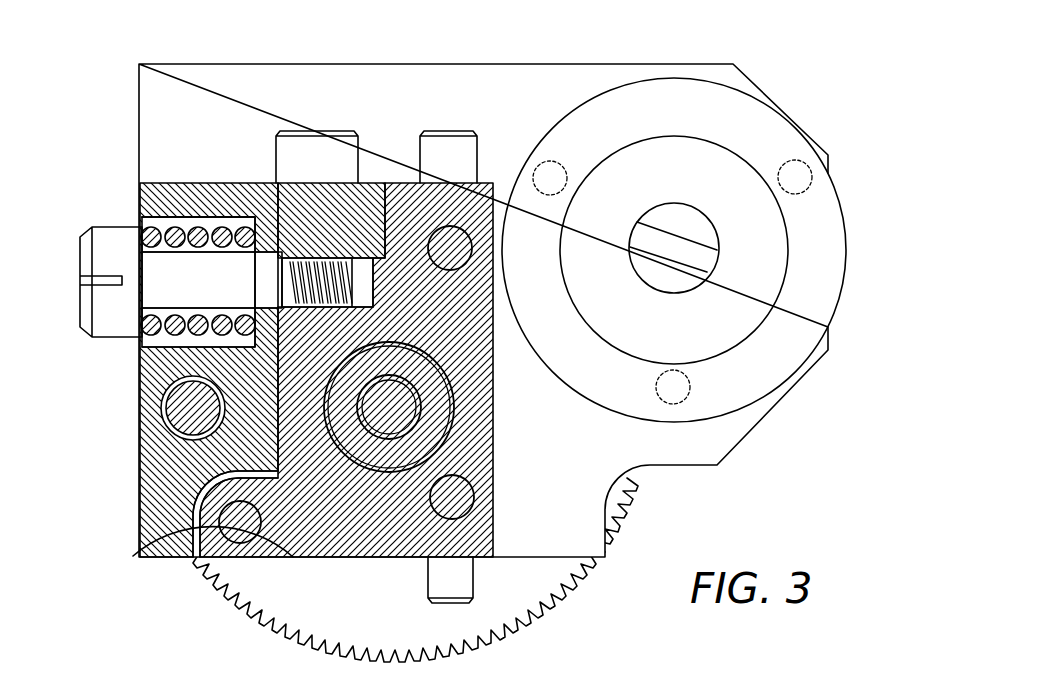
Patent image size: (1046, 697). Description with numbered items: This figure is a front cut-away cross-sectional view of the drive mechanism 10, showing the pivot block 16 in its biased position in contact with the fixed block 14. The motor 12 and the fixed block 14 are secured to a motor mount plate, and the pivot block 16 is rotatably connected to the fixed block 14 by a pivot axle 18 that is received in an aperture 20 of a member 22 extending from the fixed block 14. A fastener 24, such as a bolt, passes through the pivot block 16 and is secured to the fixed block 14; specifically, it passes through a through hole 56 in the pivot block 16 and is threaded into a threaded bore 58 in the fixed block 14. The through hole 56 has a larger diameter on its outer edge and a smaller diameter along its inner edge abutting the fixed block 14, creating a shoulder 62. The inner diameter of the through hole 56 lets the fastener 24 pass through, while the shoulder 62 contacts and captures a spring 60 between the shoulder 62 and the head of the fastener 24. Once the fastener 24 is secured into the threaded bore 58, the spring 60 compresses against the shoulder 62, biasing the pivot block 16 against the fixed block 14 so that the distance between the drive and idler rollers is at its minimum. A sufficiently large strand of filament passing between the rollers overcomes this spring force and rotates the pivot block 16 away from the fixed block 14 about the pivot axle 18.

The drive mechanism 10 is at (800, 97).
The motor 12 is at (611, 256).
The fixed block 14 is at (470, 545).
The pivot block 16 is at (148, 450).
The pivot axle 18 is at (258, 532).
The aperture 20 is at (193, 557).
The member 22 is at (135, 556).
The fastener 24 is at (80, 307).
The through hole 56 is at (142, 218).
The threaded bore 58 is at (370, 257).
The spring 60 is at (175, 235).
The shoulder 62 is at (243, 218).